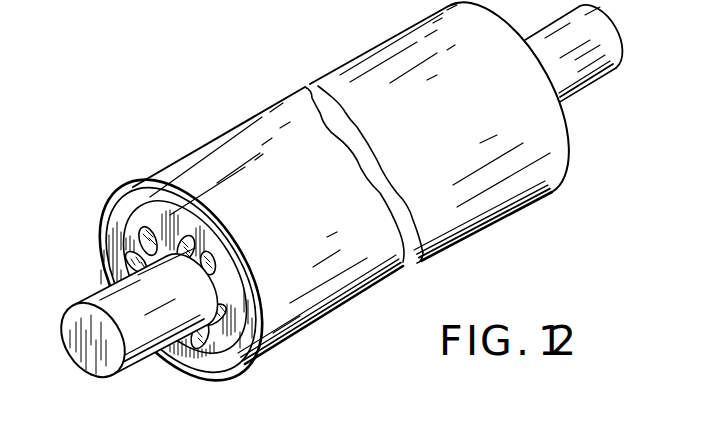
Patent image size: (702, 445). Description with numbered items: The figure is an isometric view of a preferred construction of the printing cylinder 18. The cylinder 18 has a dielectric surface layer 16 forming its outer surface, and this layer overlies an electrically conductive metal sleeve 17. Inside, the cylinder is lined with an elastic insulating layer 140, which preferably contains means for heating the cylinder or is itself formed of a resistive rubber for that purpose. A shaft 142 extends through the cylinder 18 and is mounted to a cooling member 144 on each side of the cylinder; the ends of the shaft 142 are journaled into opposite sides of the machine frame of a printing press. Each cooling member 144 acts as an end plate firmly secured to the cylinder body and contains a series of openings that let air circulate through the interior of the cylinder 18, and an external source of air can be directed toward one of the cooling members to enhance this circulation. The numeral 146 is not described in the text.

The printing cylinder 18 is at (550, 214).
The dielectric surface layer 16 is at (253, 263).
The electrically conductive metal sleeve 17 is at (178, 355).
The elastic insulating layer 140 is at (250, 359).
The shaft 142 is at (104, 298).
The cooling member 144 is at (166, 240).
The drive lugs 146 is at (206, 268).